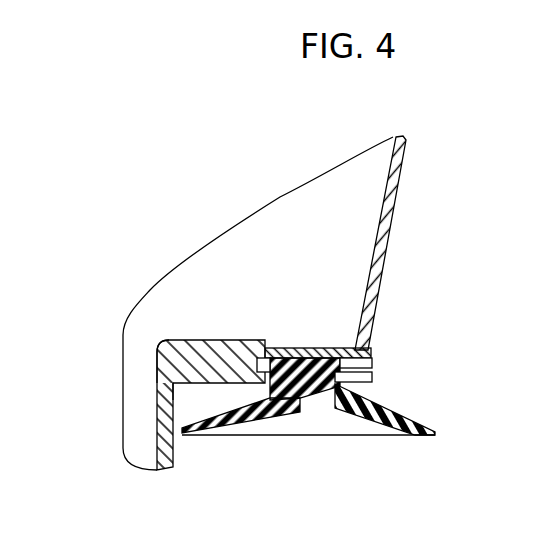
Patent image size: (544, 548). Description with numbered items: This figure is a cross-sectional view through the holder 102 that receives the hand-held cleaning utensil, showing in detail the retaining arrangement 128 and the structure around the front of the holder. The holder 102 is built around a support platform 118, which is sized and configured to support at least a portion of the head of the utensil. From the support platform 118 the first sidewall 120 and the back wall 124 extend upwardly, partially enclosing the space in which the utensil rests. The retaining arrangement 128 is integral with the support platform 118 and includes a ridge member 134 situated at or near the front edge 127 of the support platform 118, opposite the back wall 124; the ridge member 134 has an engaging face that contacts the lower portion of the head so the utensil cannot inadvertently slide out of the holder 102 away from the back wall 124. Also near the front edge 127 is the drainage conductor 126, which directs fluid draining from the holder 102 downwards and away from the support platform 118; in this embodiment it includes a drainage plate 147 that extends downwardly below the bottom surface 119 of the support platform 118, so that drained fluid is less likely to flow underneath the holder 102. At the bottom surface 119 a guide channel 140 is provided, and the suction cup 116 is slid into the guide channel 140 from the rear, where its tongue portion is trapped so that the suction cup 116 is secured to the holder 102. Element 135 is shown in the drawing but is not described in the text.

The holder 102 is at (452, 134).
The suction cup 116 is at (395, 417).
The support platform 118 is at (318, 350).
The bottom surface 119 is at (217, 385).
The first sidewall 120 is at (283, 228).
The back wall 124 is at (387, 205).
The drainage conductor 126 is at (157, 407).
The front edge 127 is at (175, 385).
The retaining arrangement 128 is at (175, 335).
The ridge member 134 is at (170, 362).
The block 135 is at (233, 327).
The guide channel 140 is at (365, 363).
The drainage plate 147 is at (160, 435).